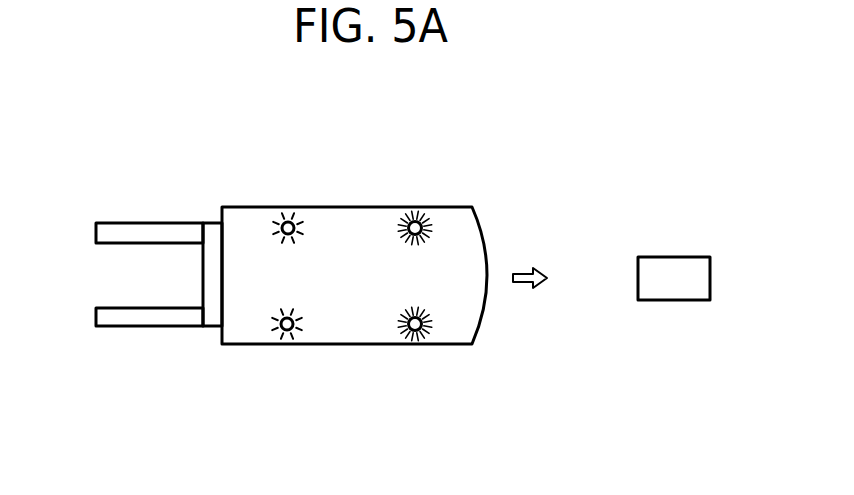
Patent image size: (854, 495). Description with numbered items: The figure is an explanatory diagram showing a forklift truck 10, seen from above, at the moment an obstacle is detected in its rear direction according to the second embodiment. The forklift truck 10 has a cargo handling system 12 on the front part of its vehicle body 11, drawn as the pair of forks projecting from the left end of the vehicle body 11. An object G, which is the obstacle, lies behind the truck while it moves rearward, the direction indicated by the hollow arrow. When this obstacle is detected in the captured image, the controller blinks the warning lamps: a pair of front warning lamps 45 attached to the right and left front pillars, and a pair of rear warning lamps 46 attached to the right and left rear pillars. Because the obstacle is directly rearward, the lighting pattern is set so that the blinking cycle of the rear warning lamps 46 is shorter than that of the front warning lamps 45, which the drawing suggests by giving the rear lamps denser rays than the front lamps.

The forklift truck 10 is at (195, 158).
The vehicle body 11 is at (485, 308).
The cargo handling system 12 is at (160, 222).
The front warning lamps 45 is at (292, 218).
The rear warning lamps 46 is at (427, 213).
The object G is at (673, 300).